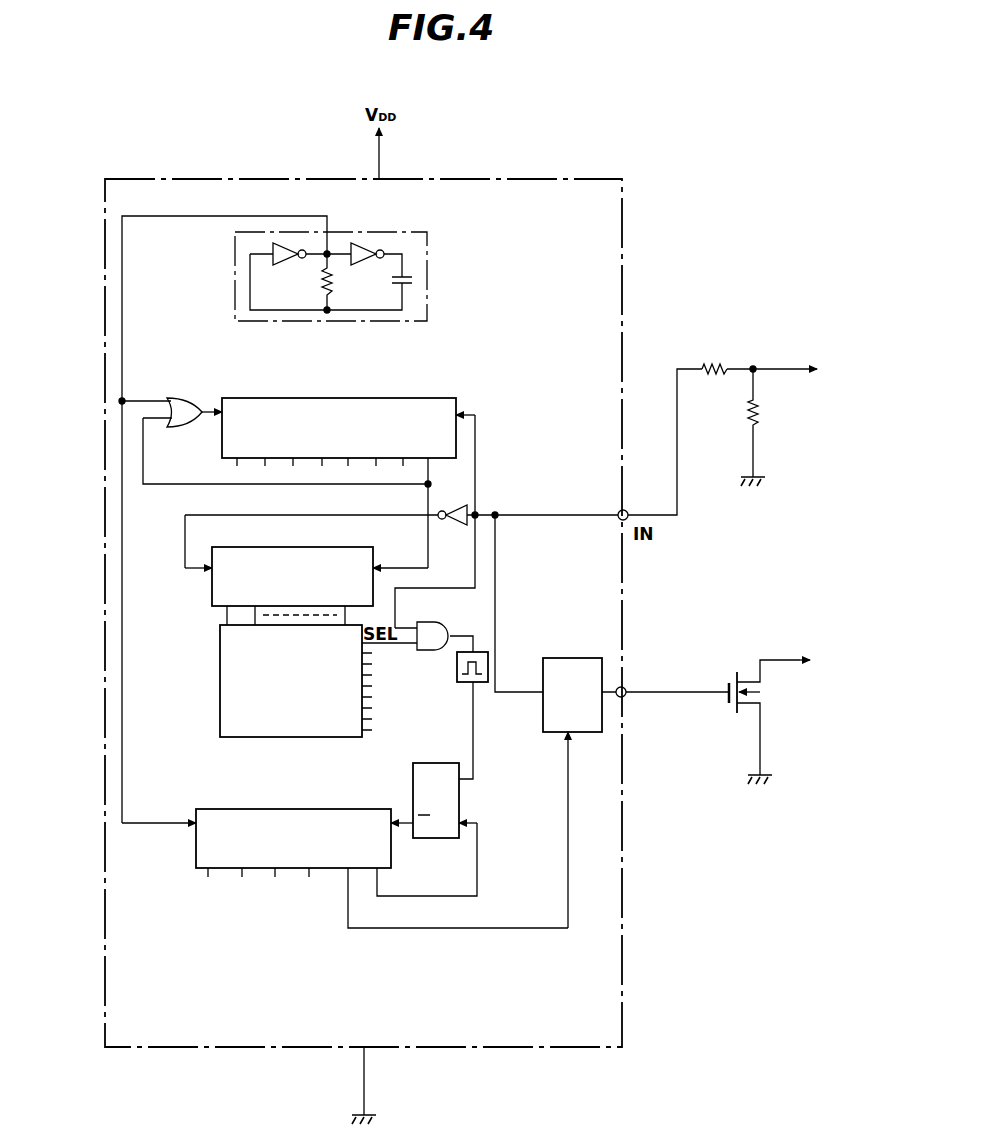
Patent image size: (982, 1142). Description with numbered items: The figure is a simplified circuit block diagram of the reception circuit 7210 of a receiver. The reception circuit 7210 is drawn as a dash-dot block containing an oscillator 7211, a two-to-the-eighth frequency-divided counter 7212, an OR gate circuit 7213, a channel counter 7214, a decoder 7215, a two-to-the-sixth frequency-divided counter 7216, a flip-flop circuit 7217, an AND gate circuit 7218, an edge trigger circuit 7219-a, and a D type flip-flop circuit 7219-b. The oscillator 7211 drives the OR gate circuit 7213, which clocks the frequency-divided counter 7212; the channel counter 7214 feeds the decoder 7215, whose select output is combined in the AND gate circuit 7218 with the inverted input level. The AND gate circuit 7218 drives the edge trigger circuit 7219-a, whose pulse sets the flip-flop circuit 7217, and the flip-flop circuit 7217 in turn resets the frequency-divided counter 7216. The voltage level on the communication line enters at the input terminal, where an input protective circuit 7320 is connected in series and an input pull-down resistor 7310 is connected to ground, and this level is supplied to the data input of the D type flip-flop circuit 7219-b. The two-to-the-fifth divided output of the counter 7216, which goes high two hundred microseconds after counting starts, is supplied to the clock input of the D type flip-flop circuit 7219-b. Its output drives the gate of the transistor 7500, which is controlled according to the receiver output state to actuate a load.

The reception circuit 7210 is at (557, 179).
The oscillator 7211 is at (405, 232).
The 2^8-frequency-divided counter 7212 is at (322, 398).
The OR gate circuit 7213 is at (178, 398).
The channel counter 7214 is at (238, 547).
The decoder 7215 is at (253, 737).
The 2^6-frequency-divided counter 7216 is at (325, 809).
The flip-flop circuit 7217 is at (425, 760).
The AND gate circuit 7218 is at (430, 622).
The edge trigger circuit 7219-a is at (488, 655).
The D type flip-flop circuit 7219-b is at (555, 732).
The input protective circuit 7320 is at (712, 368).
The input pull-down resistor 7310 is at (758, 410).
The transistor 7500 is at (762, 703).